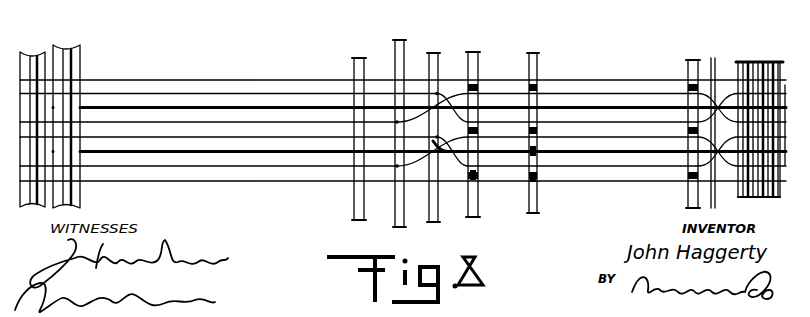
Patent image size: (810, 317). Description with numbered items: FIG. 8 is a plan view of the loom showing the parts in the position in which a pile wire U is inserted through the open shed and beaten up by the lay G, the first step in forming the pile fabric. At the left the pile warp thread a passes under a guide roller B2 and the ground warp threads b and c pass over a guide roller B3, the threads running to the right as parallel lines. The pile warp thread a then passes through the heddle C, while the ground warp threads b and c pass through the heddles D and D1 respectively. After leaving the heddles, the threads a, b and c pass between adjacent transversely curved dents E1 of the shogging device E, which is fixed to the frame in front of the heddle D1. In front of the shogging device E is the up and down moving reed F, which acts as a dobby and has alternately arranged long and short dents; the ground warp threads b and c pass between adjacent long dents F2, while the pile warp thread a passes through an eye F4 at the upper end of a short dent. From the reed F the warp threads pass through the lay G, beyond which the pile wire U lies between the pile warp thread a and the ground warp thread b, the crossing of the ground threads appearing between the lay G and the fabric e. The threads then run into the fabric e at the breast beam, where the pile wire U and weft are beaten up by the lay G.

The guide roller B3 is at (33, 62).
The guide roller B2 is at (81, 62).
The pile warp thread a is at (207, 108).
The ground warp thread b is at (146, 121).
The ground warp thread c is at (265, 93).
The heddle C is at (359, 58).
The heddle D is at (399, 40).
The heddle D1 is at (433, 53).
The shogging device E is at (472, 52).
The dent E1 is at (478, 182).
The reed F is at (537, 74).
The long dent F2 is at (537, 180).
The eye F4 is at (538, 150).
The lay G is at (688, 70).
The pile wire U is at (714, 58).
The fabric e is at (770, 62).